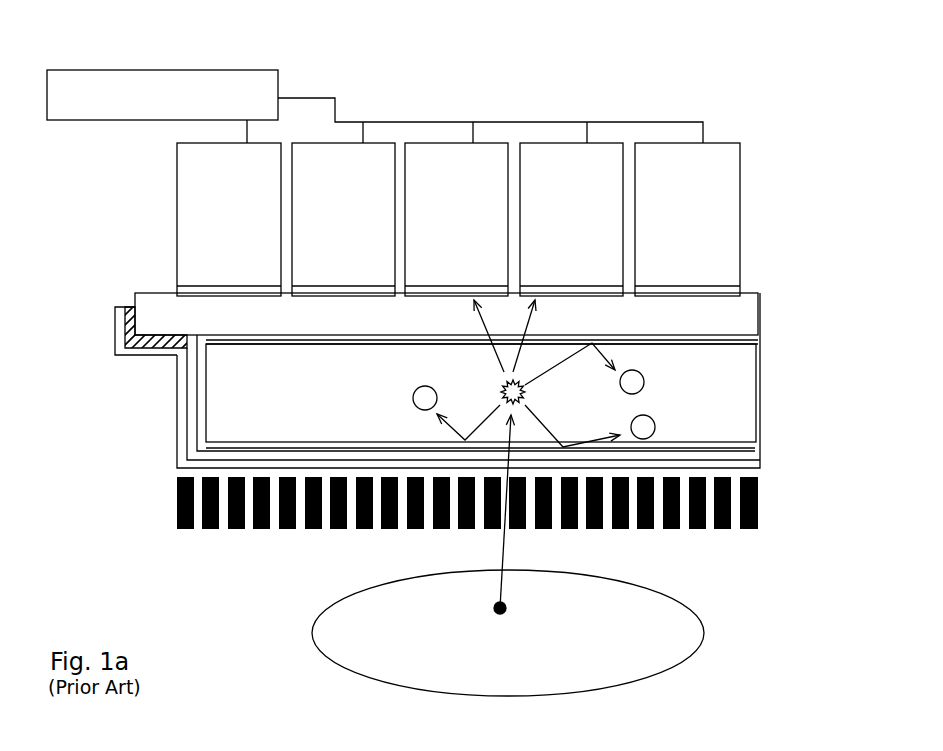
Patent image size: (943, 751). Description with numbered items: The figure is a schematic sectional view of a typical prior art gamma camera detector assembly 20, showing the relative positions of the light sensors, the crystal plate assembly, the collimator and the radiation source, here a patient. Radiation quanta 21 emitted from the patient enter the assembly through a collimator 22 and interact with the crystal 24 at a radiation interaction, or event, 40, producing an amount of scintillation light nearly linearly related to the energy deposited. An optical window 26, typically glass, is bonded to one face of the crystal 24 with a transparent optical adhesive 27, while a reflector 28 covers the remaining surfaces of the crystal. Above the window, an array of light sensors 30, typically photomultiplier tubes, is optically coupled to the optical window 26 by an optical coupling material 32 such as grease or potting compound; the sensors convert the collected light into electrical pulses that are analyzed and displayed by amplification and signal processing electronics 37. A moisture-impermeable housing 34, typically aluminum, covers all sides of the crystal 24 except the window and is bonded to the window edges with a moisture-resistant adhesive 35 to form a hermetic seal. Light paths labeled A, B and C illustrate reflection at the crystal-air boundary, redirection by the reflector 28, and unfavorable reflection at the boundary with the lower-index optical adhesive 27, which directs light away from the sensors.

The gamma camera detector assembly 20 is at (733, 130).
The radiation quanta 21 is at (504, 547).
The collimator 22 is at (760, 495).
The crystal 24 is at (481, 393).
The optical window 26 is at (446, 314).
The transparent optical adhesive 27 is at (740, 340).
The reflector 28 is at (737, 451).
The light sensors 30 is at (458, 219).
The optical coupling material 32 is at (728, 293).
The housing 34 is at (177, 446).
The moisture-resistant adhesive 35 is at (137, 348).
The amplification and signal processing electronics 37 is at (112, 120).
The radiation interaction (event) 40 is at (525, 370).